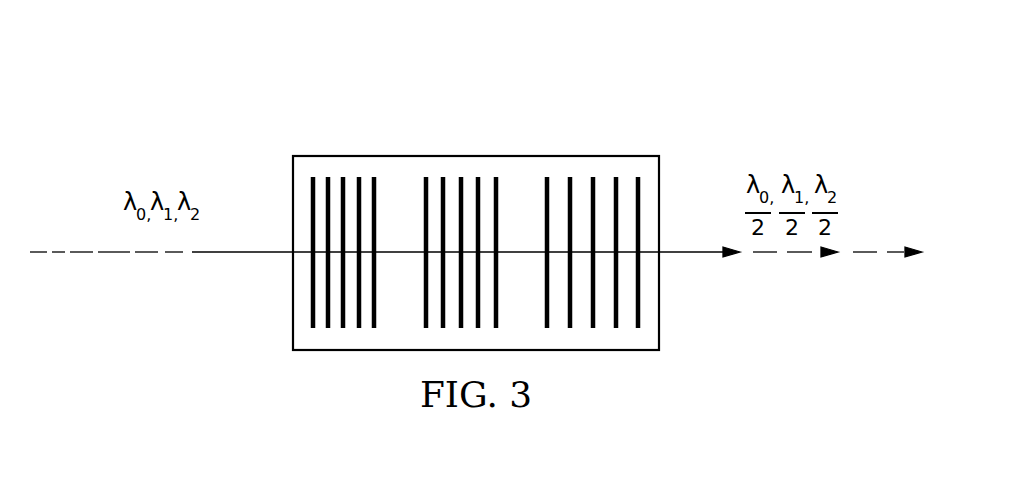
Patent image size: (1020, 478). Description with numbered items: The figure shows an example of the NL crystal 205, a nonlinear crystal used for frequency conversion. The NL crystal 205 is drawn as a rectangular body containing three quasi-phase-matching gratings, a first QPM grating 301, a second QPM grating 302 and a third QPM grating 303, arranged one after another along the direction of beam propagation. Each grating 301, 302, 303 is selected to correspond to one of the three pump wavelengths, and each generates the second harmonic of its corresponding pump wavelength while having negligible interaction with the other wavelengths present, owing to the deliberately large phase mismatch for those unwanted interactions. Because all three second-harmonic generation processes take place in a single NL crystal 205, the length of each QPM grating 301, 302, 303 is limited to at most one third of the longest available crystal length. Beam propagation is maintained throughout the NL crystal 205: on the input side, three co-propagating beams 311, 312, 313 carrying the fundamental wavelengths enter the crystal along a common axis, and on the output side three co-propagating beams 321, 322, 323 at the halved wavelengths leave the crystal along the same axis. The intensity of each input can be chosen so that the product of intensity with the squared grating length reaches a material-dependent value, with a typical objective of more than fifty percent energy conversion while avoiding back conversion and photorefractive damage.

The NL crystal 205 is at (545, 68).
The QPM grating 301 is at (343, 167).
The QPM grating 302 is at (458, 167).
The QPM grating 303 is at (608, 165).
The co-propagating beam 311 is at (63, 253).
The co-propagating beam 312 is at (148, 253).
The co-propagating beam 313 is at (255, 253).
The co-propagating beam 321 is at (698, 254).
The co-propagating beam 322 is at (795, 254).
The co-propagating beam 323 is at (887, 254).